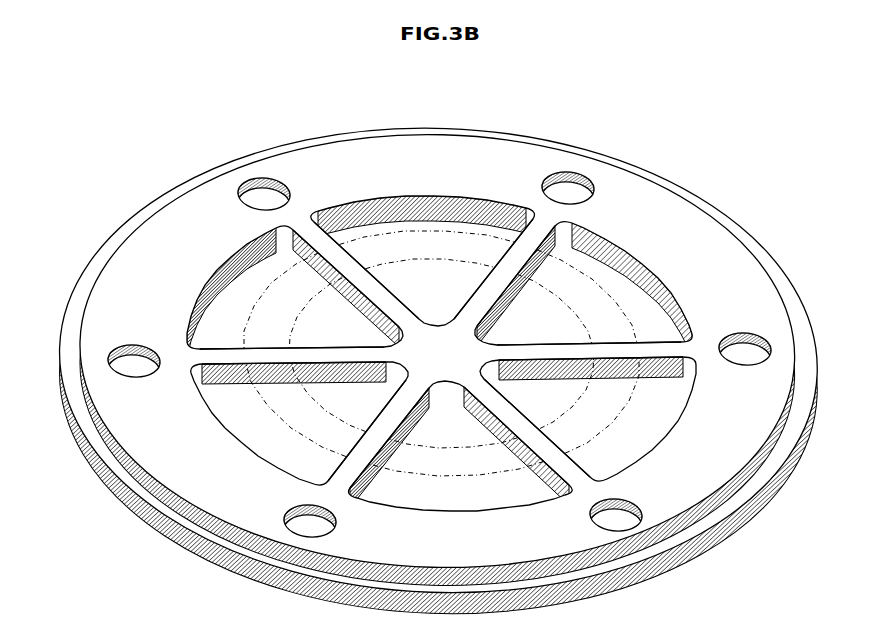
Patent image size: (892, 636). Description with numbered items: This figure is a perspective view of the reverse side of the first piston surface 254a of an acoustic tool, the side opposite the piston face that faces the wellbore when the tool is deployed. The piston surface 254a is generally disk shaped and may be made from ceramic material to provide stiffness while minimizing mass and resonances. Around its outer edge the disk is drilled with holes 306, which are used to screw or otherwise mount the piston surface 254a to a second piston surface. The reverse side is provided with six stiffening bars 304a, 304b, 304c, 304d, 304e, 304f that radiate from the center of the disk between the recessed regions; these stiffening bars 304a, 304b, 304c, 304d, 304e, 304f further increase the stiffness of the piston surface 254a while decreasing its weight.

The first piston surface 254a is at (275, 145).
The holes 306 is at (263, 200).
The stiffening bar 304a is at (330, 253).
The stiffening bar 304b is at (519, 252).
The stiffening bar 304c is at (656, 350).
The stiffening bar 304d is at (556, 460).
The stiffening bar 304e is at (370, 443).
The stiffening bar 304f is at (275, 357).